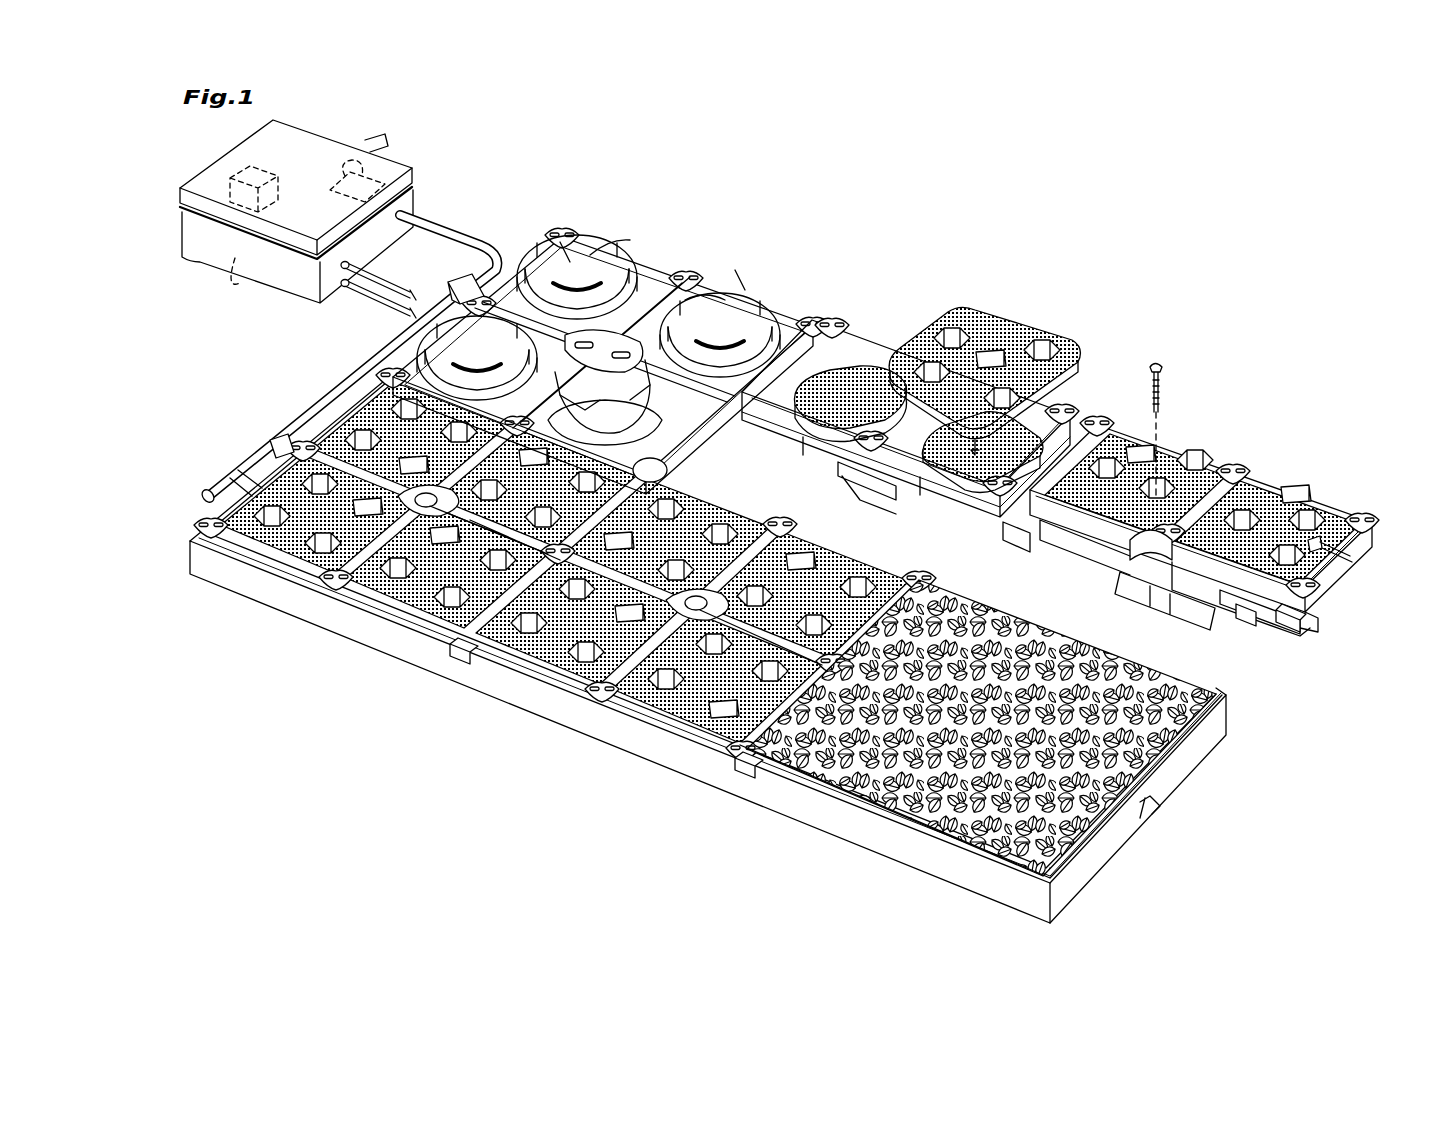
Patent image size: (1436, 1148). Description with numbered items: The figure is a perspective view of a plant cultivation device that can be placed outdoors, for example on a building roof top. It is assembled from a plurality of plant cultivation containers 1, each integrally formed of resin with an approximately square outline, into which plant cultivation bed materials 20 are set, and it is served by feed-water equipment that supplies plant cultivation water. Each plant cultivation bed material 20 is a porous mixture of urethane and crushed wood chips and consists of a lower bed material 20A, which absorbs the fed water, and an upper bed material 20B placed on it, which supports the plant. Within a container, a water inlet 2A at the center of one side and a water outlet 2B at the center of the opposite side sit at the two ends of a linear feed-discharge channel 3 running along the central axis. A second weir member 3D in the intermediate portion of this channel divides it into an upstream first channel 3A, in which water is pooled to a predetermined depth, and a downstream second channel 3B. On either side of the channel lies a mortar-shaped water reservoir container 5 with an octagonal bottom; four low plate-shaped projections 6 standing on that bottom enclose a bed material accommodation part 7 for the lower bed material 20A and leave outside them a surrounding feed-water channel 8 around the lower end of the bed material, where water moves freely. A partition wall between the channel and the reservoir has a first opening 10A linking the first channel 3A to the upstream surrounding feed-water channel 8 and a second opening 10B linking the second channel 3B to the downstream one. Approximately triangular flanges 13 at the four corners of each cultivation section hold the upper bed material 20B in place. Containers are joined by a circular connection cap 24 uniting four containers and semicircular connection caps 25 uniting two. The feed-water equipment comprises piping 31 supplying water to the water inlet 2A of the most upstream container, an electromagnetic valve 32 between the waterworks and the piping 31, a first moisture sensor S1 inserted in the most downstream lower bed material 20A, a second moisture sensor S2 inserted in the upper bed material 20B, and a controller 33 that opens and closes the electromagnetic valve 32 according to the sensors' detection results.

The plant cultivation container 1 is at (322, 597).
The water inlet 2A is at (488, 288).
The water outlet 2B is at (1152, 815).
The feed-discharge channel 3 is at (522, 312).
The first channel 3A is at (1016, 537).
The second channel 3B is at (1258, 628).
The second weir member 3D is at (1176, 592).
The water reservoir container 5 is at (455, 385).
The plate-shaped projection 6 is at (650, 290).
The bed material accommodation part 7 is at (742, 355).
The surrounding feed-water channel 8 is at (582, 275).
The first opening 10A is at (1070, 540).
The second opening 10B is at (1218, 600).
The flange 13 is at (1226, 470).
The plant cultivation bed material 20 is at (900, 245).
The lower bed material 20A is at (862, 386).
The upper bed material 20B is at (245, 505).
The circular connection cap 24 is at (668, 478).
The semicircular connection cap 25 is at (455, 655).
The piping 31 is at (338, 396).
The electromagnetic valve 32 is at (374, 176).
The controller 33 is at (240, 260).
The first moisture sensor S1 is at (1285, 624).
The second moisture sensor S2 is at (1314, 538).